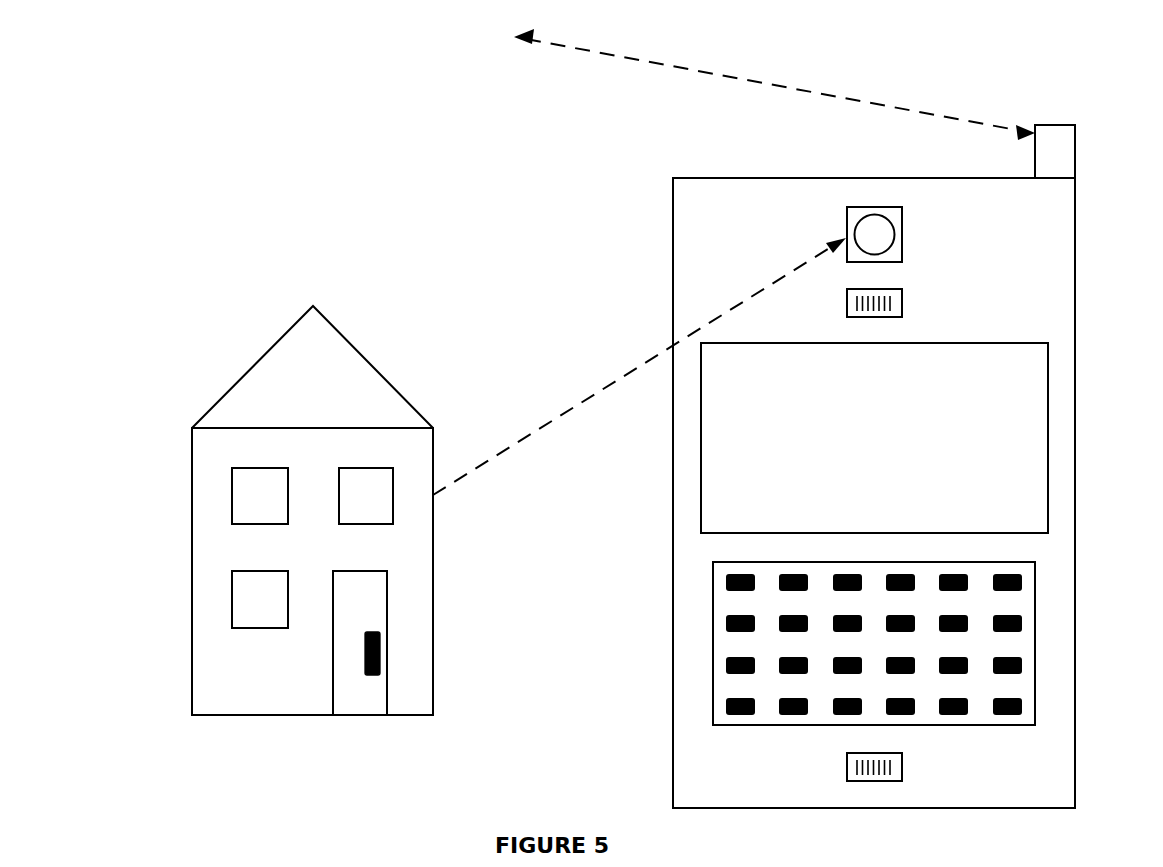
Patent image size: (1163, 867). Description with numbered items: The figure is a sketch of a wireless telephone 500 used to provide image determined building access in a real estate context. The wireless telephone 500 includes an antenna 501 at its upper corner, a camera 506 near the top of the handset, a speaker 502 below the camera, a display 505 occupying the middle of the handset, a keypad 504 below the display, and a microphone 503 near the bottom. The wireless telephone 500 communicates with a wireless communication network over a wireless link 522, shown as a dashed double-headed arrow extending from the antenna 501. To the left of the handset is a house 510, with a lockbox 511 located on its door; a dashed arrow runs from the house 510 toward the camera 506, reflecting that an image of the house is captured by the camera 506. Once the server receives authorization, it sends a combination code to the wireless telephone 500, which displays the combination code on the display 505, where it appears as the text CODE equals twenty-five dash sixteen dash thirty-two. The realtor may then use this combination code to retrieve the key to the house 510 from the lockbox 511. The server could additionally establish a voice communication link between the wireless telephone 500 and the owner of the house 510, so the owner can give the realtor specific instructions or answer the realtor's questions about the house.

The wireless telephone 500 is at (1058, 53).
The antenna 501 is at (1072, 125).
The speaker 502 is at (904, 313).
The microphone 503 is at (904, 776).
The keypad 504 is at (780, 726).
The display 505 is at (1031, 343).
The camera 506 is at (904, 236).
The house 510 is at (192, 466).
The lockbox 511 is at (381, 664).
The wireless link 522 is at (669, 63).